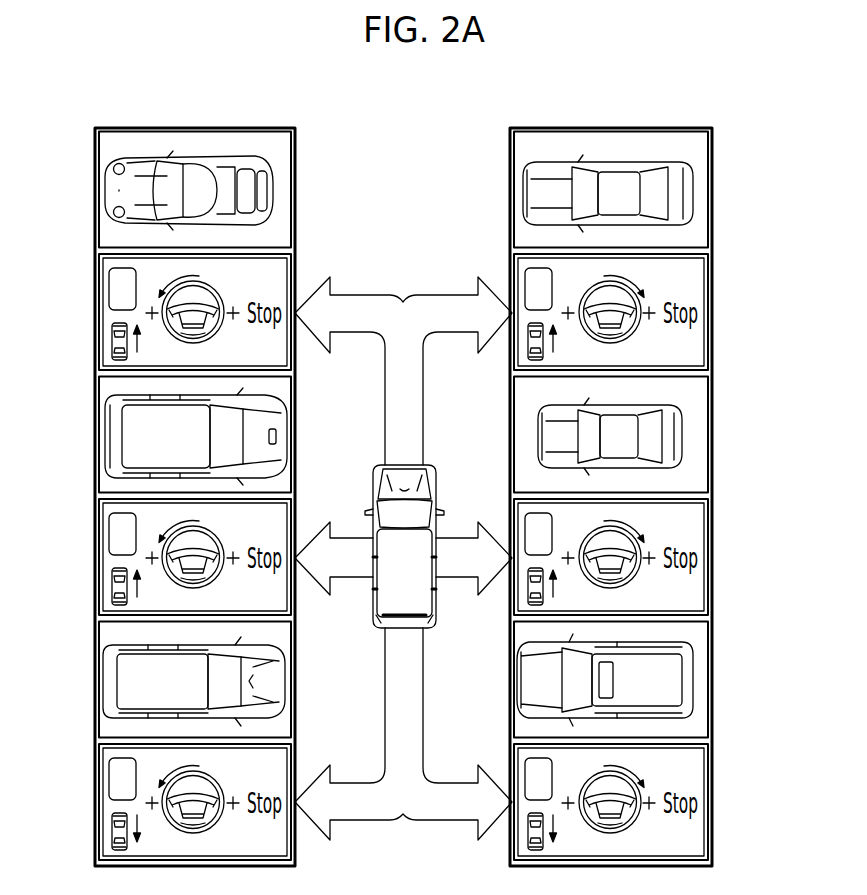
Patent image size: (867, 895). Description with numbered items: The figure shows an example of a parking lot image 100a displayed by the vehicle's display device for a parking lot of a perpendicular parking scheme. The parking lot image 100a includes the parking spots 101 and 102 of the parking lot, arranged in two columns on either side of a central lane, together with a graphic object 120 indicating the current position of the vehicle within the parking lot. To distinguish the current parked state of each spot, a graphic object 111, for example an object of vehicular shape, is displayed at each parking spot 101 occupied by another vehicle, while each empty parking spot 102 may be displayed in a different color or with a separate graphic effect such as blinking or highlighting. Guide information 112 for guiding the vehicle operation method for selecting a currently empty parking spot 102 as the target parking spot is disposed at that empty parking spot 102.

The parking lot image 100a is at (437, 108).
The parking spot 101 is at (95, 213).
The parking spot 102 is at (95, 318).
The graphic object 111 is at (628, 165).
The guide information 112 is at (704, 338).
The graphic object 120 is at (387, 605).